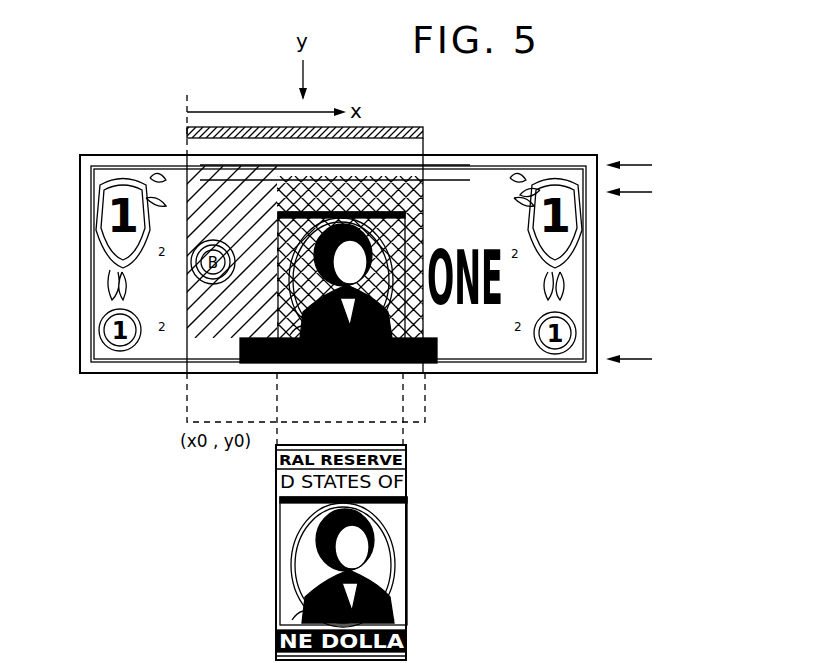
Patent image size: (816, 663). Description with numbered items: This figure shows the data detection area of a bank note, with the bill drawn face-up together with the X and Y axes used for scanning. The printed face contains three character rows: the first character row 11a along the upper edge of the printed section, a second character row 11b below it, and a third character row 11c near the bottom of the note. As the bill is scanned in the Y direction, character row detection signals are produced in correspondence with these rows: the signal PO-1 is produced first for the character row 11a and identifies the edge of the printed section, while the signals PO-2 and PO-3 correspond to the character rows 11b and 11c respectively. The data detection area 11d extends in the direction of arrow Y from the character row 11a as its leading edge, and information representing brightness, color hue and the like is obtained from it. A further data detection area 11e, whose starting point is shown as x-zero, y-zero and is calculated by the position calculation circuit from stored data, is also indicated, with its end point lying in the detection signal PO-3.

The first character row 11a is at (205, 172).
The character row 11b is at (190, 197).
The character row 11c is at (240, 362).
The data detection area 11d is at (195, 288).
The data detection area 11e is at (397, 335).
The character row detection signal PO-1 is at (652, 166).
The character row detection signal PO-2 is at (652, 193).
The character row detection signal PO-3 is at (652, 360).